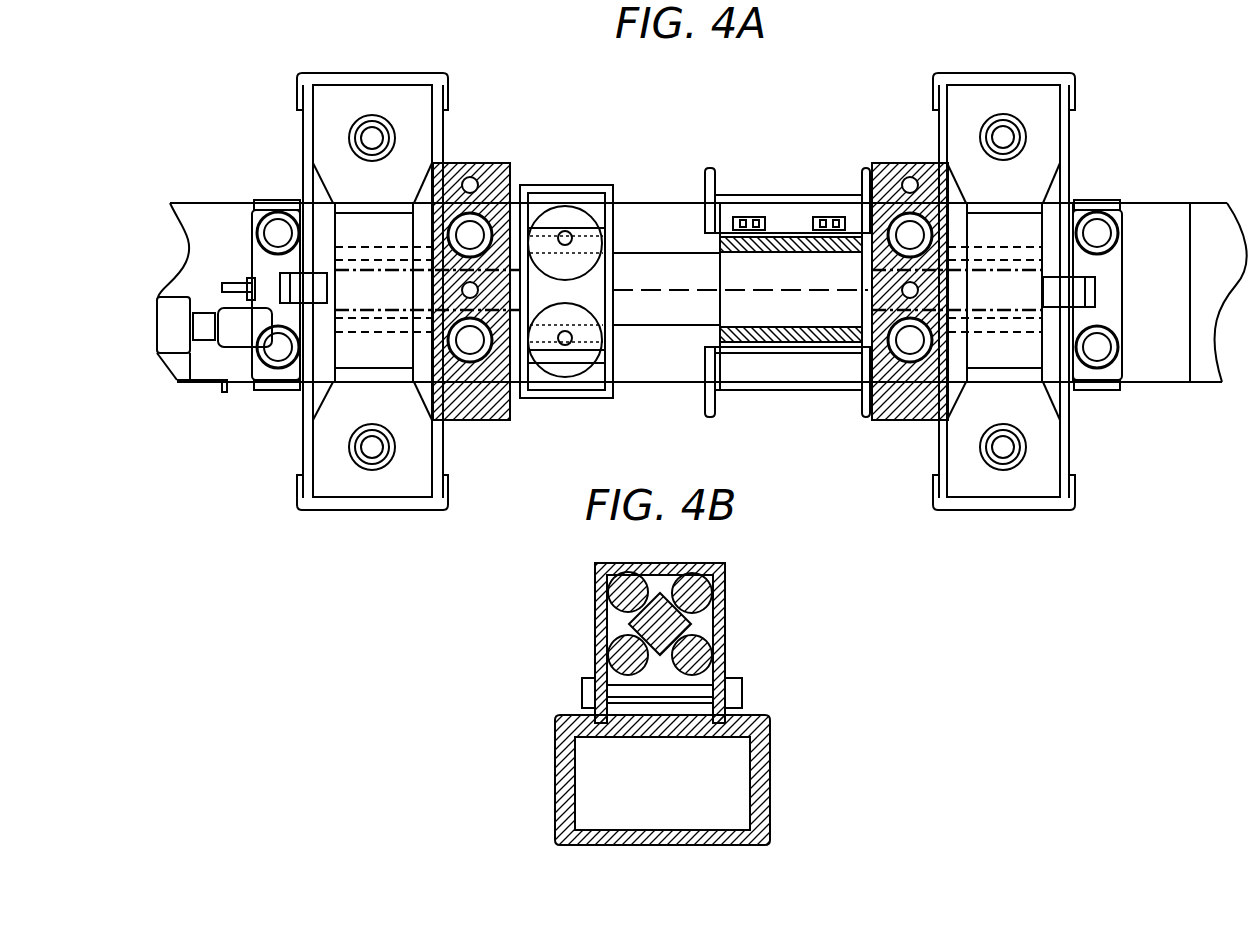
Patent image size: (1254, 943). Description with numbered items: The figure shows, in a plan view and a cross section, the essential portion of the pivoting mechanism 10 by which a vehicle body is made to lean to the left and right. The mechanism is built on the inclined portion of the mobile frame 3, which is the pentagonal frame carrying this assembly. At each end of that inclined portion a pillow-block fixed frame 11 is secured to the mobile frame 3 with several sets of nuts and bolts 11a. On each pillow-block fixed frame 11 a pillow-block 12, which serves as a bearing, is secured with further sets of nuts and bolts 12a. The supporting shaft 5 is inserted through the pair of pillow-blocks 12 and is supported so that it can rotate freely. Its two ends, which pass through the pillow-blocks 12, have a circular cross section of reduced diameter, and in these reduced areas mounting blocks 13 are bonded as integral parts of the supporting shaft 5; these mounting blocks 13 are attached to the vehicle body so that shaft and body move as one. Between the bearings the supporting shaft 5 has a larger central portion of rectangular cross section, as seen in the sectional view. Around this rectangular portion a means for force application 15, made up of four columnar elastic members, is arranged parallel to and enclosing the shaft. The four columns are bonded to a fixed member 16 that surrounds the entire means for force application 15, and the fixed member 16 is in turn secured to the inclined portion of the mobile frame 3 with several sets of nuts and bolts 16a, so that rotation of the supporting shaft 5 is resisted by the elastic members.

In FIG. 4A, the pivoting mechanism 10 is at (868, 80).
In FIG. 4A, the pillow-block fixed frame 11 is at (338, 76).
In FIG. 4A, the nuts and bolts 11a is at (278, 353).
In FIG. 4A, the pillow-block 12 is at (400, 95).
In FIG. 4A, the nuts and bolts 12a is at (378, 460).
In FIG. 4A, the mounting block 13 is at (491, 162).
In FIG. 4A, the mobile frame 3 is at (627, 215).
In FIG. 4B, the mobile frame 3 is at (770, 750).
In FIG. 4A, the supporting shaft 5 is at (672, 265).
In FIG. 4B, the supporting shaft 5 is at (695, 622).
In FIG. 4A, the means for force application 15 is at (786, 240).
In FIG. 4B, the means for force application 15 is at (700, 590).
In FIG. 4A, the fixed member 16 is at (813, 392).
In FIG. 4B, the fixed member 16 is at (730, 658).
In FIG. 4A, the nuts and bolts 16a is at (746, 218).
In FIG. 4B, the nuts and bolts 16a is at (743, 690).